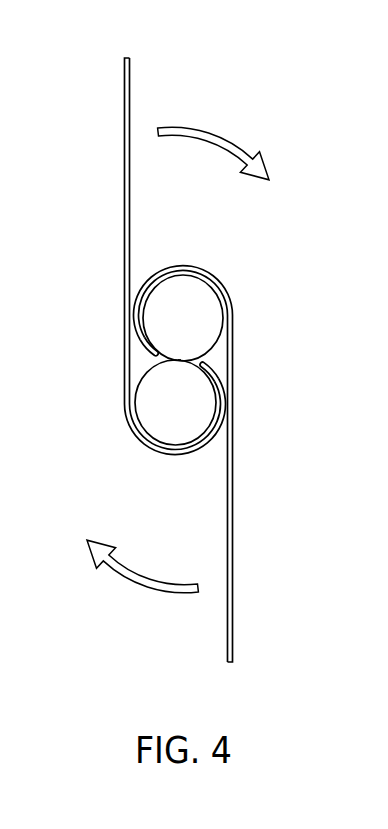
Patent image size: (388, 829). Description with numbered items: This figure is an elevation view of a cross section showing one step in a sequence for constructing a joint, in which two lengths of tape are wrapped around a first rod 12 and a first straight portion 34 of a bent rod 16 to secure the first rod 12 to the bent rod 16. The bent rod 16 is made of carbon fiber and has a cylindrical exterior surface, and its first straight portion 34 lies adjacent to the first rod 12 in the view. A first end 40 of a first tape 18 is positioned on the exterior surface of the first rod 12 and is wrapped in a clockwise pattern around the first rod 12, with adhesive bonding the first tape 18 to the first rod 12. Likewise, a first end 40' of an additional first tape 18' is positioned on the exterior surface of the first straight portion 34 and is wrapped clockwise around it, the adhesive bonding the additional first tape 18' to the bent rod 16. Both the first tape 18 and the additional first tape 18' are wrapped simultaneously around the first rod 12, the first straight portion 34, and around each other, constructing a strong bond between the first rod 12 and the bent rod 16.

The first rod 12 is at (143, 373).
The bent rod 16 is at (224, 331).
The first tape 18 is at (141, 256).
The additional first tape 18' is at (216, 464).
The first straight portion 34 is at (216, 343).
The first end of the first tape 40 is at (242, 380).
The first end of the additional first tape 40' is at (115, 349).